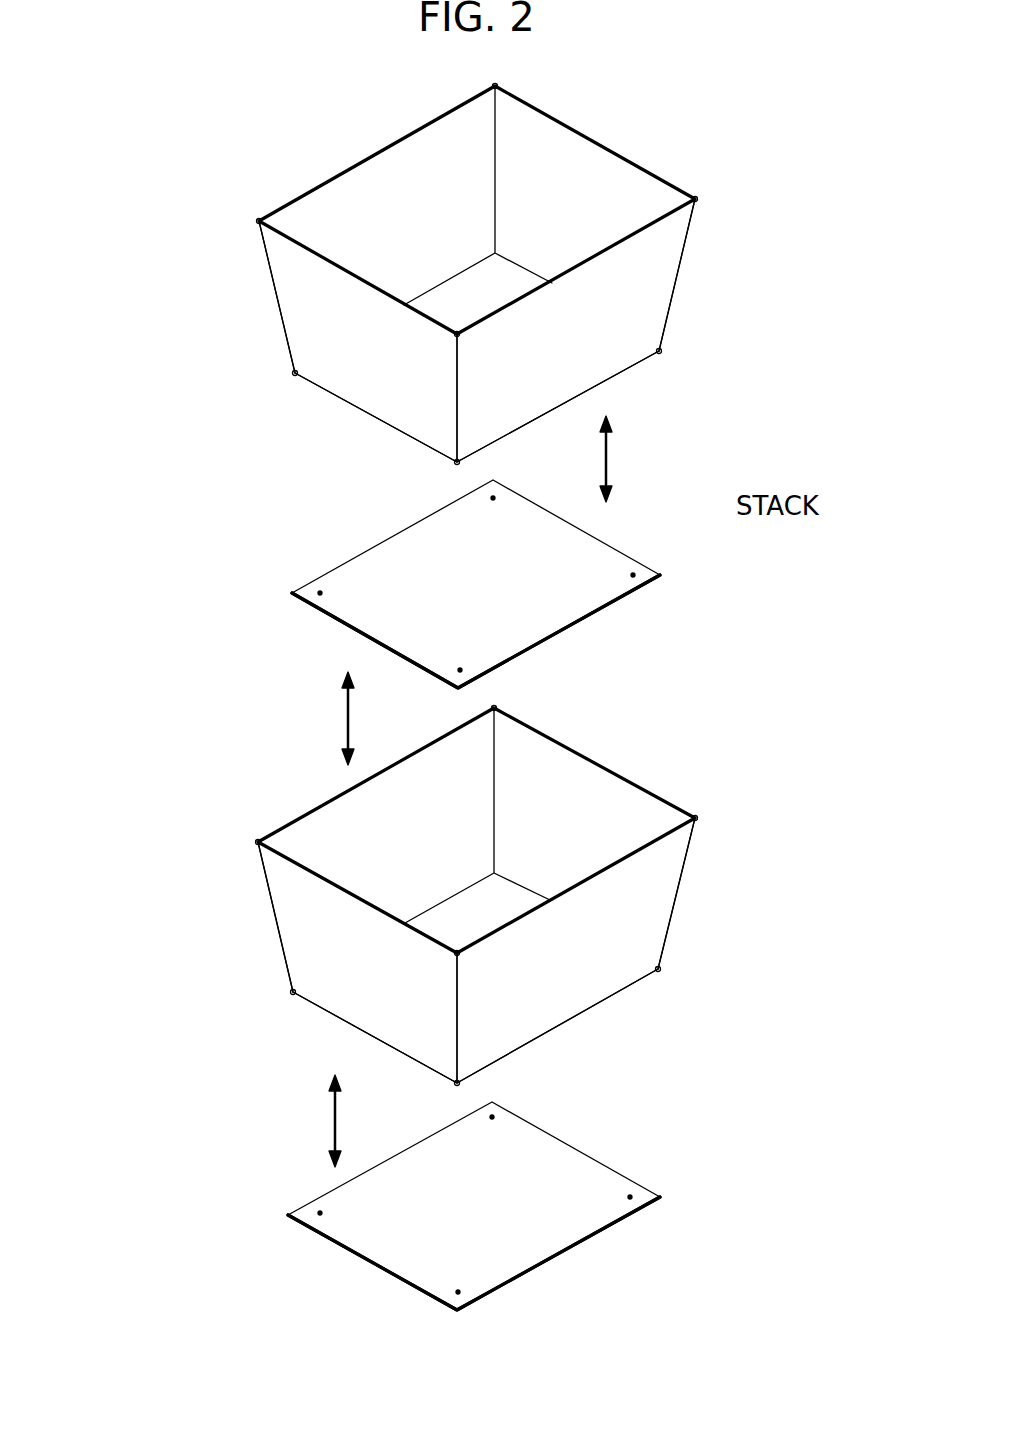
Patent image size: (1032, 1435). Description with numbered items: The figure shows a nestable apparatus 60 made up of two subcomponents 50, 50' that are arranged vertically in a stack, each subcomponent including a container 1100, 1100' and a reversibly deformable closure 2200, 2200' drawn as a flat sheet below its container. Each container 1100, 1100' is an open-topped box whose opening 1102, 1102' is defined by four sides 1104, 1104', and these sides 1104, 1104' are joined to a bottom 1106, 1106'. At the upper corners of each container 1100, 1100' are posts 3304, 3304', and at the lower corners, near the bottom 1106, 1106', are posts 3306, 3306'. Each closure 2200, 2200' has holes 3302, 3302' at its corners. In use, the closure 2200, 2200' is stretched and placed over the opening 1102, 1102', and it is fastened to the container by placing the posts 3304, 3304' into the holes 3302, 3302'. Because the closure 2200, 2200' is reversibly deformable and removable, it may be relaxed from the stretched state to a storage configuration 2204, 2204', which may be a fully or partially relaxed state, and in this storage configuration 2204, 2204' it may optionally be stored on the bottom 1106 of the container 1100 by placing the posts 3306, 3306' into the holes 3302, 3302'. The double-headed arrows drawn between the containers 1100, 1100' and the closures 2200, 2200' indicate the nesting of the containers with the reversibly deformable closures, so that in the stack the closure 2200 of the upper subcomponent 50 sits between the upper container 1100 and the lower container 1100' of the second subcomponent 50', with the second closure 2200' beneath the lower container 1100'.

The nestable apparatus 60 is at (158, 633).
The subcomponent 50 is at (584, 387).
The container 1100 is at (538, 274).
The opening 1102 is at (526, 174).
The sides 1104 is at (477, 326).
The bottom 1106 is at (512, 406).
The posts 3304 is at (512, 260).
The posts 3306 is at (472, 442).
The reversibly deformable closure 2200 is at (476, 584).
The storage configuration 2204 is at (531, 631).
The holes 3302 is at (479, 566).
The subcomponent 50' is at (580, 1009).
The container 1100' is at (542, 895).
The opening 1102' is at (542, 802).
The sides 1104' is at (476, 939).
The bottom 1106' is at (514, 1026).
The posts 3304' is at (479, 852).
The posts 3306' is at (497, 1050).
The reversibly deformable closure 2200' is at (474, 1206).
The storage configuration 2204' is at (505, 1253).
The holes 3302' is at (472, 1197).